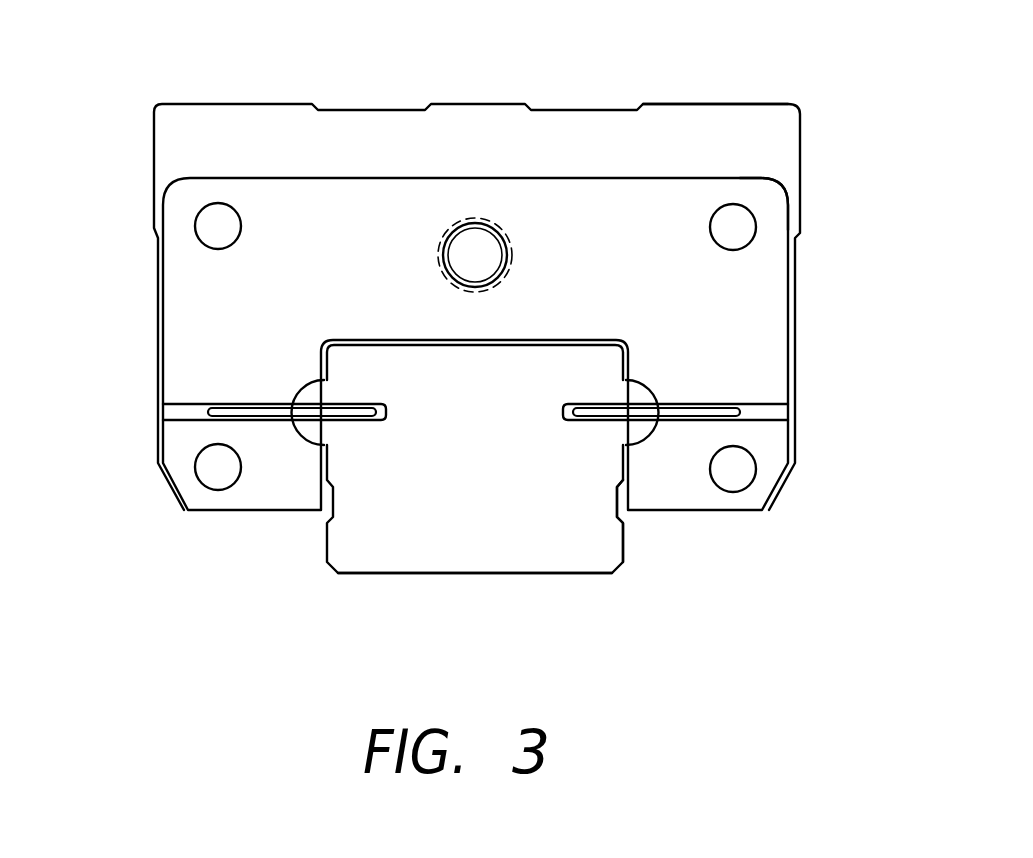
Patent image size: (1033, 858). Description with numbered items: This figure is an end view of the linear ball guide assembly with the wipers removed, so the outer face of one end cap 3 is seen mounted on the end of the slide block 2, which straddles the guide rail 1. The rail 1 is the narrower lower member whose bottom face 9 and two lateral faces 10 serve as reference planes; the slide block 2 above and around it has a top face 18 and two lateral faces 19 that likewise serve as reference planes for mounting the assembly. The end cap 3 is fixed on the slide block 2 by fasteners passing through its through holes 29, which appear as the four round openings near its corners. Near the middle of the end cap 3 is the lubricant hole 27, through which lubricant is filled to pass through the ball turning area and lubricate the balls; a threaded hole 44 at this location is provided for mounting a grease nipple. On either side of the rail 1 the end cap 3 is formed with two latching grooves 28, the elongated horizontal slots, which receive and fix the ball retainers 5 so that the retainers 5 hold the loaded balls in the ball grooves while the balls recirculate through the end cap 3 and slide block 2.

The guide rail 1 is at (472, 540).
The slide block 2 is at (622, 135).
The end cap 3 is at (755, 325).
The ball retainer 5 is at (293, 413).
The bottom face 9 is at (393, 574).
The lateral faces 10 is at (625, 532).
The top face 18 is at (727, 104).
The lateral faces 19 is at (792, 178).
The lubricant hole 27 is at (475, 245).
The latching grooves 28 is at (185, 413).
The through holes 29 is at (210, 228).
The threaded hole 44 is at (497, 228).